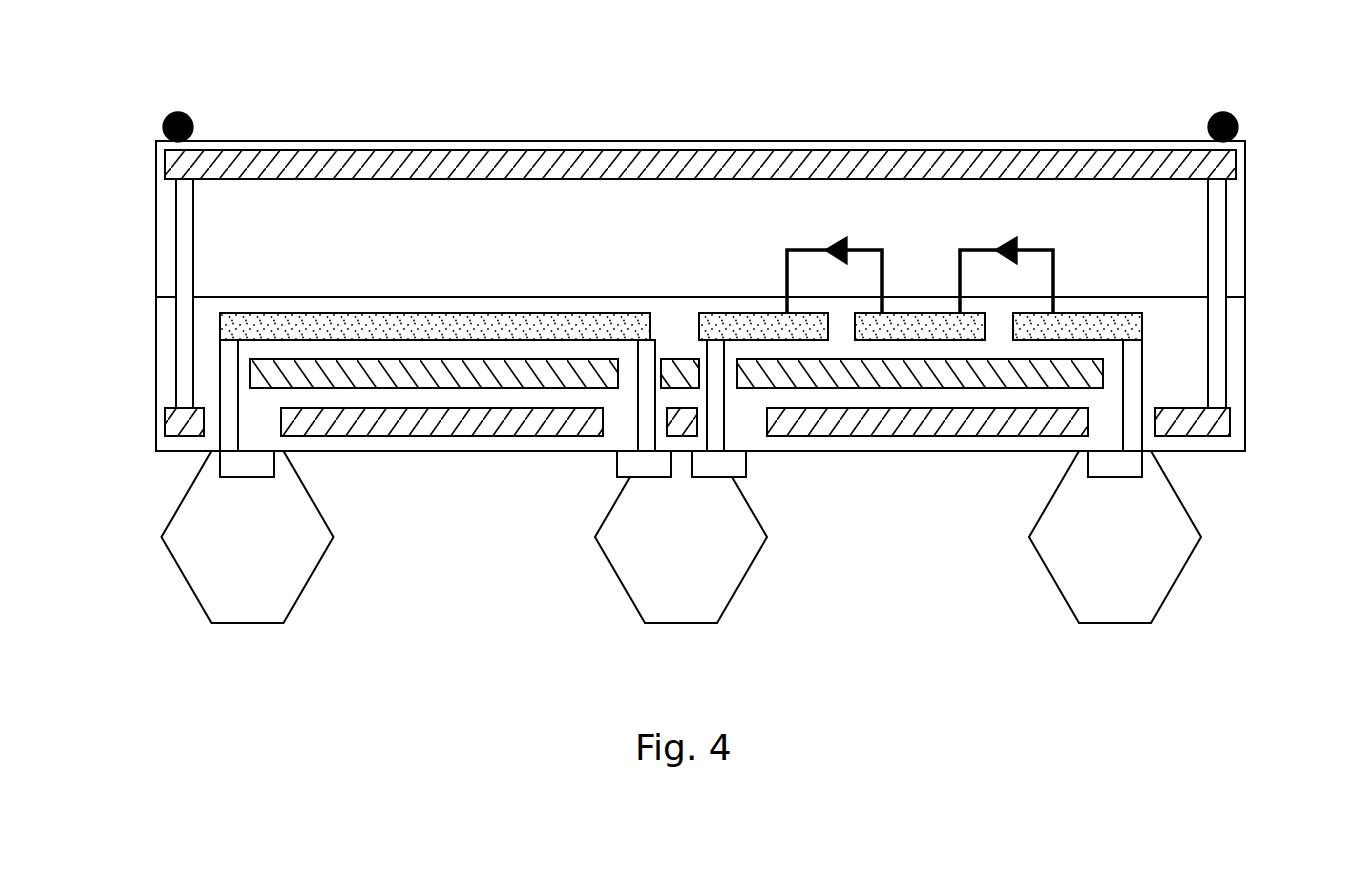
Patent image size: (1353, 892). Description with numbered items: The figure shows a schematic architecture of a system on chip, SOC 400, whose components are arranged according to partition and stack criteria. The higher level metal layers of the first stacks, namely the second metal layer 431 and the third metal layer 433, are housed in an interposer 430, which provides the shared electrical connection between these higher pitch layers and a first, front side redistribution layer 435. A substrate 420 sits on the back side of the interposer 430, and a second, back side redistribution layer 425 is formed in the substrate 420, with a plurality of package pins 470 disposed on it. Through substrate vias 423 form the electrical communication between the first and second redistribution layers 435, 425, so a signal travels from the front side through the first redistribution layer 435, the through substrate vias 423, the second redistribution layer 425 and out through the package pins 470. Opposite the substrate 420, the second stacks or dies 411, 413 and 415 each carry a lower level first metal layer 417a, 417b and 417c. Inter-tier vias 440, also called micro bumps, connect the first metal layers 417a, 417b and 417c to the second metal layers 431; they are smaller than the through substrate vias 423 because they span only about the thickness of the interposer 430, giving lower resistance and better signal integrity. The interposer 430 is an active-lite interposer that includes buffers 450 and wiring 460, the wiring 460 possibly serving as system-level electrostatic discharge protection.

The system on chip (SOC) 400 is at (132, 63).
The second stack (die) 411 is at (296, 567).
The second stack (die) 413 is at (730, 567).
The second stack (die) 415 is at (1165, 567).
The first metal layer 417a is at (266, 464).
The first metal layer 417b is at (735, 465).
The first metal layer 417c is at (1137, 463).
The substrate 420 is at (1235, 227).
The through substrate vias (TSVs) 423 is at (1217, 276).
The second (back side) redistribution layer 425 is at (1230, 167).
The interposer 430 is at (1237, 388).
The second metal layer 431 is at (238, 329).
The third metal layer 433 is at (263, 375).
The first (front side) redistribution layer (RDL) 435 is at (1220, 418).
The inter-tier vias 440 is at (1132, 358).
The buffers 450 is at (837, 238).
The wiring 460 is at (865, 250).
The package pins 470 is at (1237, 128).